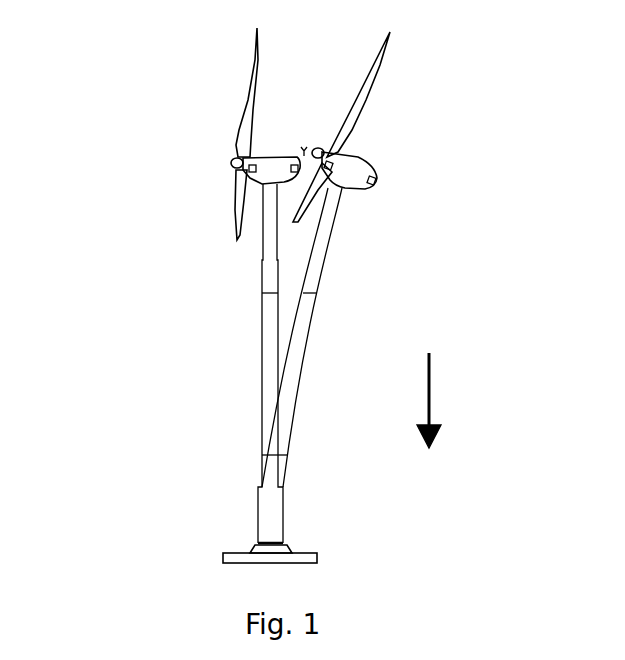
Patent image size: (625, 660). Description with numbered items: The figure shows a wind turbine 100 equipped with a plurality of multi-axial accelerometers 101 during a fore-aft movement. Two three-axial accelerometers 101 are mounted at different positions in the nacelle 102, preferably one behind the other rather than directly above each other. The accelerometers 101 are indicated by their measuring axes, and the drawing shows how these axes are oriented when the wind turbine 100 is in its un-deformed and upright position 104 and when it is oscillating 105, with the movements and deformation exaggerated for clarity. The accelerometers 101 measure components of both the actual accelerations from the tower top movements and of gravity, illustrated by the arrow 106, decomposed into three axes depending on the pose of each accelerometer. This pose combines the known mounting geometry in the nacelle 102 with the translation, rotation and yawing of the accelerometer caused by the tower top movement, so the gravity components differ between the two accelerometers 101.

The wind turbine 100 is at (148, 138).
The multi-axial accelerometer 101 is at (329, 164).
The nacelle 102 is at (367, 158).
The un-deformed and upright position 104 is at (272, 320).
The oscillating position 105 is at (318, 280).
The gravity arrow 106 is at (430, 410).